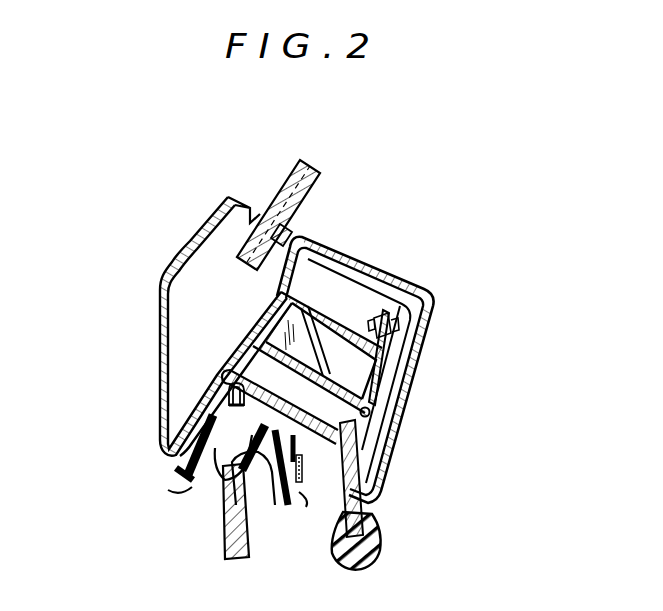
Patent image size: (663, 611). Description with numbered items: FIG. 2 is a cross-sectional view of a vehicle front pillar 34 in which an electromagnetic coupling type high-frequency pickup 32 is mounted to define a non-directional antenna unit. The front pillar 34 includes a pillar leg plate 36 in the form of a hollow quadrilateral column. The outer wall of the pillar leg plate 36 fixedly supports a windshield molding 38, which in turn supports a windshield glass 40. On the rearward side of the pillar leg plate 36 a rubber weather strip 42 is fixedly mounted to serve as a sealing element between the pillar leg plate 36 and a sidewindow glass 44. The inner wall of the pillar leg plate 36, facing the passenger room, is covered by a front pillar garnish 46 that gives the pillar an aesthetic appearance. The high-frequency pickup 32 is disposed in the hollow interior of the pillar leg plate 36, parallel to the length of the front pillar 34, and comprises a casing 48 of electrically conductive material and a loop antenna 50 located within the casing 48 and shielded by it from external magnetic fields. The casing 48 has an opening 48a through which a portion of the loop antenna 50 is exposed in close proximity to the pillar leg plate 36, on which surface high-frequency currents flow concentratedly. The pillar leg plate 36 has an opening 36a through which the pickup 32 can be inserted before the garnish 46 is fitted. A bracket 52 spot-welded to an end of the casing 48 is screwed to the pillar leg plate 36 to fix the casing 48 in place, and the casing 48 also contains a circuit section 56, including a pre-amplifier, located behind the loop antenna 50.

The high-frequency pickup 32 is at (306, 286).
The front pillar 34 is at (388, 259).
The pillar leg plate 36 is at (388, 462).
The opening 36a is at (395, 345).
The windshield molding 38 is at (160, 426).
The windshield glass 40 is at (290, 187).
The weather strip 42 is at (205, 479).
The sidewindow glass 44 is at (223, 536).
The front pillar garnish 46 is at (406, 275).
The casing 48 is at (250, 323).
The opening 48a is at (365, 441).
The loop antenna 50 is at (370, 415).
The bracket 52 is at (393, 381).
The circuit section 56 is at (311, 321).